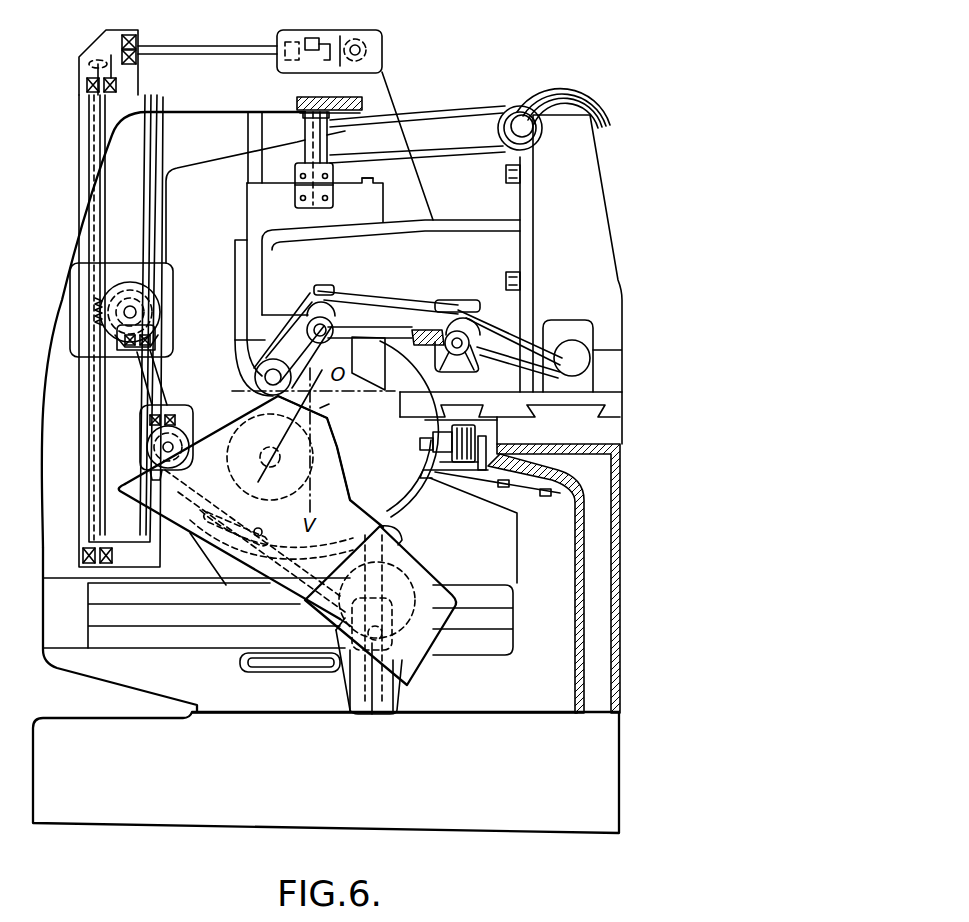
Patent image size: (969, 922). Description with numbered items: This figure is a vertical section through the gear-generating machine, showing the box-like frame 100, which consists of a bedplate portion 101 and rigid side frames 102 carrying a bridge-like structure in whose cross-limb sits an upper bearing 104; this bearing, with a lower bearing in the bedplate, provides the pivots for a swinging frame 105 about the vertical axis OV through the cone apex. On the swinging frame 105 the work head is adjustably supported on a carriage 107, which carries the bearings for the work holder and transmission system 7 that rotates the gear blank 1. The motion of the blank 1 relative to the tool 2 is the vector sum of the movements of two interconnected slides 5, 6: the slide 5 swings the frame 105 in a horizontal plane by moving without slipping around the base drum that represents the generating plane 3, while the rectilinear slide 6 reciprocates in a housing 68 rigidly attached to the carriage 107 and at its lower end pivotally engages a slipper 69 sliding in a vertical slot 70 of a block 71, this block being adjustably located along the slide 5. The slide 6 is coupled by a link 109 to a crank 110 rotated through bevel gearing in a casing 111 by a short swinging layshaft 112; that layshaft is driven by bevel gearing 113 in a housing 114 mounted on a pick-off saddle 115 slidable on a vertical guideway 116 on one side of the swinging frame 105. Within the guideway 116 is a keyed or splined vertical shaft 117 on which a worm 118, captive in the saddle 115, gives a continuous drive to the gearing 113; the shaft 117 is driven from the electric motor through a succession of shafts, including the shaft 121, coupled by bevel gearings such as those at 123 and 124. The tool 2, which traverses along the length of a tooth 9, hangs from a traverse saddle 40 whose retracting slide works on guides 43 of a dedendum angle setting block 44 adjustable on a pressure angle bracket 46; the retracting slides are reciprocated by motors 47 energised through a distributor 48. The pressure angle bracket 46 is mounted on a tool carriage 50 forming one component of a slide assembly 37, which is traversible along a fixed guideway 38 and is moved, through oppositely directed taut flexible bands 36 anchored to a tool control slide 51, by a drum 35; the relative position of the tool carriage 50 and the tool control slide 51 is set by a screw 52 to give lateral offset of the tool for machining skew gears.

The gear blank 1 is at (331, 402).
The tool 2 is at (240, 350).
The generating plane 3 is at (232, 390).
The slide 5 is at (197, 641).
The rectilinear slide 6 is at (320, 543).
The work holder and transmission system 7 is at (250, 418).
The tooth 9 is at (334, 415).
The drum 35 is at (433, 431).
The taut flexible bands 36 is at (447, 460).
The slide assembly 37 is at (408, 408).
The fixed guideway 38 is at (575, 438).
The traverse saddle 40 is at (235, 254).
The guide 43 is at (265, 180).
The dedendum angle setting block 44 is at (247, 200).
The pressure angle bracket 46 is at (453, 225).
The motor 47 is at (329, 146).
The distributor 48 is at (510, 127).
The tool carriage 50 is at (613, 411).
The tool control slide 51 is at (497, 423).
The screw 52 is at (464, 403).
The housing 68 is at (356, 506).
The slipper 69 is at (368, 604).
The vertical slot 70 is at (375, 708).
The block 71 is at (343, 680).
The frame 100 is at (617, 578).
The bedplate portion 101 is at (75, 723).
The side frame 102 is at (467, 716).
The upper bearing 104 is at (366, 106).
The swinging frame 105 is at (54, 483).
The carriage 107 is at (353, 463).
The link 109 is at (200, 495).
The crank 110 is at (190, 452).
The casing 111 is at (180, 438).
The layshaft 112 is at (150, 397).
The bevel gearing 113 is at (100, 328).
The housing 114 is at (122, 290).
The pick-off saddle 115 is at (173, 283).
The vertical guideway 116 is at (79, 121).
The vertical shaft 117 is at (106, 176).
The worm 118 is at (95, 310).
The shaft 121 is at (207, 46).
The bevel gearing 123 is at (386, 42).
The bevel gearing 124 is at (120, 58).